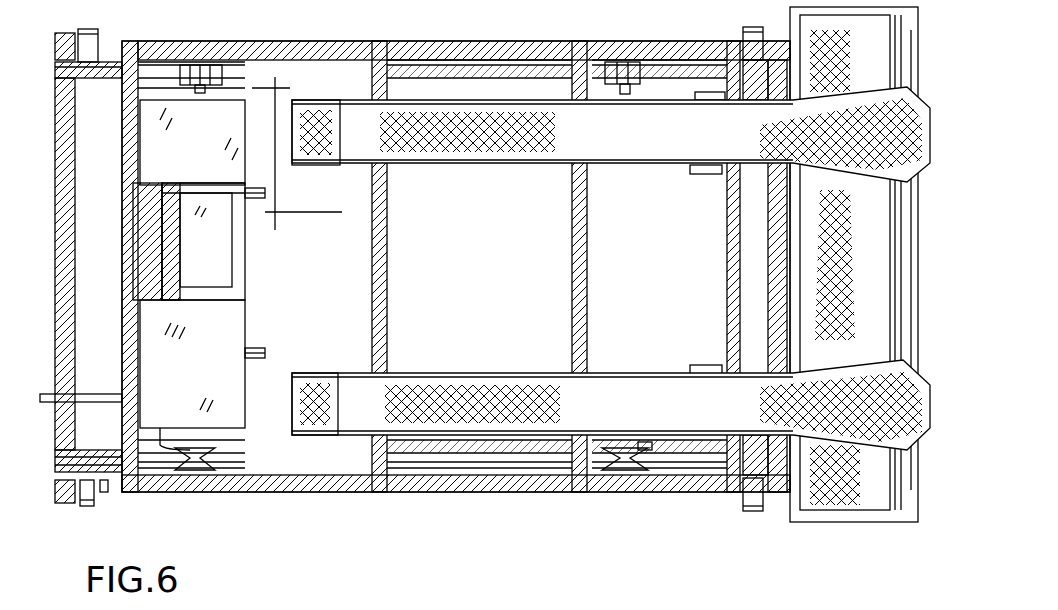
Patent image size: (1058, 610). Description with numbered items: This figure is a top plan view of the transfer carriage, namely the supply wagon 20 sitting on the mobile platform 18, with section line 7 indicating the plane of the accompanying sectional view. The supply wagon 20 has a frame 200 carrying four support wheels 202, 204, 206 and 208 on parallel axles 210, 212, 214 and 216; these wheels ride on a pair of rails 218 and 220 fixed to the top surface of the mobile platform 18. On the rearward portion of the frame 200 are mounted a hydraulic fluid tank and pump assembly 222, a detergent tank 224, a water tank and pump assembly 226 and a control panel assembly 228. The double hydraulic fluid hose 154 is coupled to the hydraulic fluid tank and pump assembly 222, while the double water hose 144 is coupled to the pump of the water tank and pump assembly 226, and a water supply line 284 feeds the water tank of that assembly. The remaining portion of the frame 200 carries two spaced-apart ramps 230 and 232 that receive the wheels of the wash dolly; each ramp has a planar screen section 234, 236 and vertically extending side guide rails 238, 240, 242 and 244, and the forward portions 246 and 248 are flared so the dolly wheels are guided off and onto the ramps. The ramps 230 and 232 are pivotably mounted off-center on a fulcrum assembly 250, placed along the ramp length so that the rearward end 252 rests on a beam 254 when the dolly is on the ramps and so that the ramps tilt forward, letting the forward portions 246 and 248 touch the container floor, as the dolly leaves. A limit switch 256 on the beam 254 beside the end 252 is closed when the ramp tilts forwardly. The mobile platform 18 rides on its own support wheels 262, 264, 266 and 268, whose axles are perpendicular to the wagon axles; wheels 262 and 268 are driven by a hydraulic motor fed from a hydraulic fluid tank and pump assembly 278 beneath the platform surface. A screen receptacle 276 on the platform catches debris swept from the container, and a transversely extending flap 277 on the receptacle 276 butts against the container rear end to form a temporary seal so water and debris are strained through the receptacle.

The section line 7- 7 is at (42, 40).
The mobile platform 18 is at (105, 493).
The supply wagon 20 is at (120, 298).
The double water hose 144 is at (262, 350).
The double hydraulic fluid hose 154 is at (253, 190).
The frame 200 is at (510, 490).
The support wheel 202 is at (200, 465).
The support wheel 204 is at (190, 72).
The support wheel 206 is at (620, 73).
The support wheel 208 is at (625, 468).
The axle 210 is at (164, 423).
The axle 212 is at (208, 90).
The axle 214 is at (645, 90).
The axle 216 is at (645, 455).
The rail 218 is at (68, 508).
The rail 220 is at (110, 70).
The hydraulic fluid tank and pump assembly 222 is at (192, 142).
The detergent tank 224 is at (203, 241).
The water tank and pump assembly 226 is at (192, 364).
The control panel assembly 228 is at (146, 235).
The ramp 230 is at (354, 440).
The ramp 232 is at (476, 97).
The planar screen section 234 is at (611, 405).
The planar screen section 236 is at (611, 134).
The side guide rail 238 is at (678, 437).
The side guide rail 240 is at (470, 373).
The side guide rail 242 is at (637, 168).
The side guide rail 244 is at (640, 105).
The forward portion 246 is at (905, 405).
The forward portion 248 is at (885, 115).
The fulcrum assembly 250 is at (703, 175).
The rearward end 252 is at (320, 150).
The beam 254 is at (385, 92).
The limit switch 256 is at (385, 172).
The support wheel 262 is at (92, 508).
The support wheel 264 is at (86, 50).
The support wheel 266 is at (752, 30).
The support wheel 268 is at (752, 512).
The receptacle 276 is at (857, 505).
The flap 277 is at (920, 485).
The hydraulic fluid tank and pump assembly 278 is at (107, 428).
The water supply line 284 is at (96, 394).